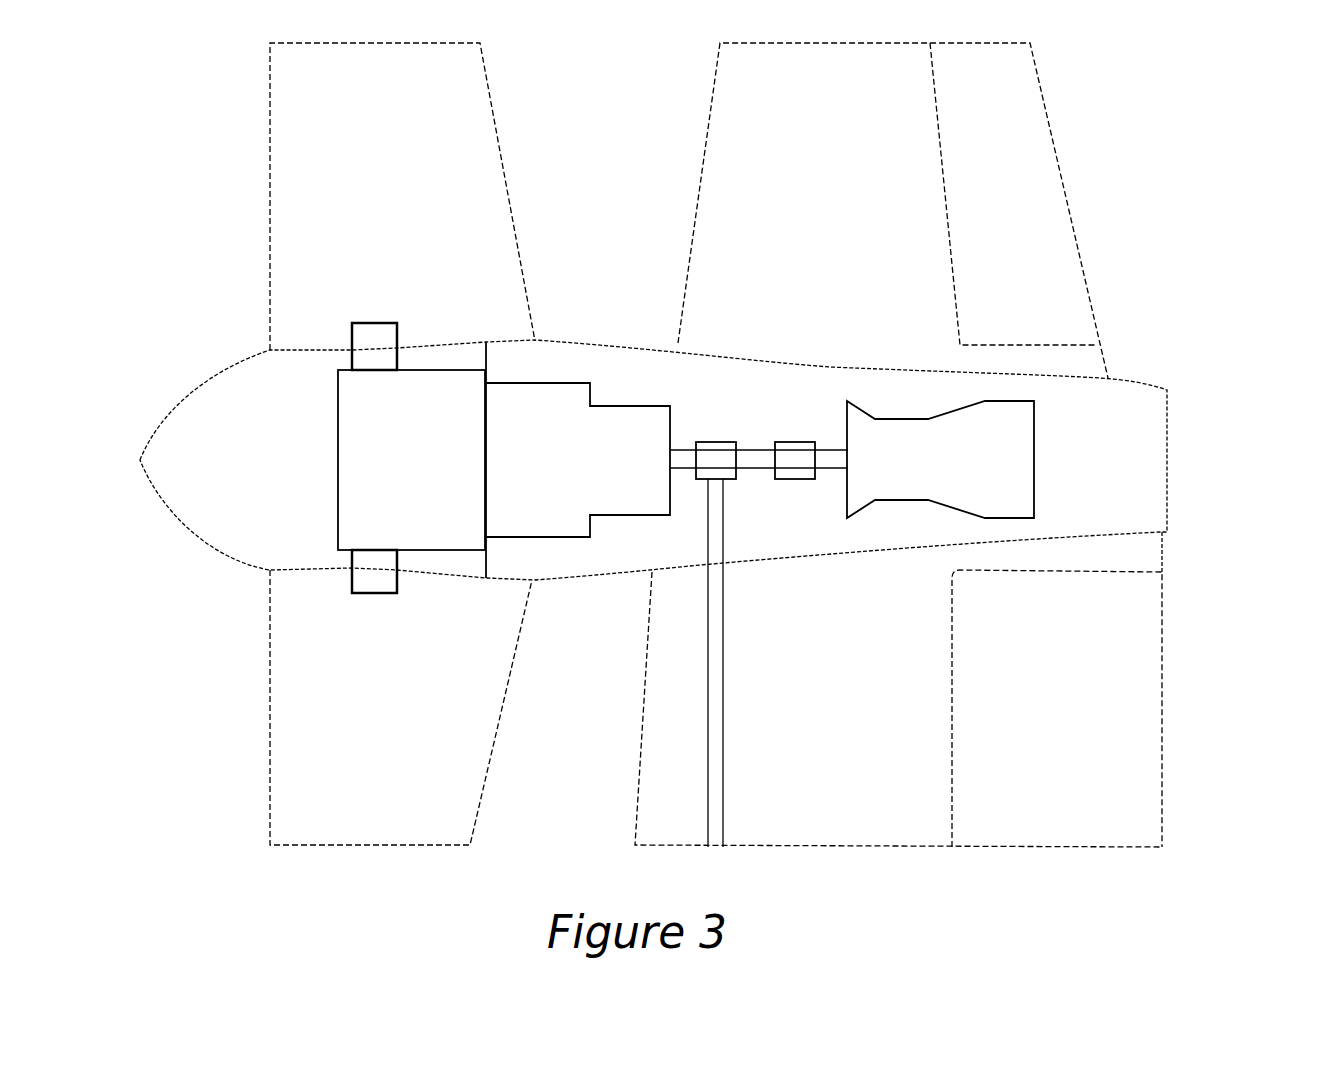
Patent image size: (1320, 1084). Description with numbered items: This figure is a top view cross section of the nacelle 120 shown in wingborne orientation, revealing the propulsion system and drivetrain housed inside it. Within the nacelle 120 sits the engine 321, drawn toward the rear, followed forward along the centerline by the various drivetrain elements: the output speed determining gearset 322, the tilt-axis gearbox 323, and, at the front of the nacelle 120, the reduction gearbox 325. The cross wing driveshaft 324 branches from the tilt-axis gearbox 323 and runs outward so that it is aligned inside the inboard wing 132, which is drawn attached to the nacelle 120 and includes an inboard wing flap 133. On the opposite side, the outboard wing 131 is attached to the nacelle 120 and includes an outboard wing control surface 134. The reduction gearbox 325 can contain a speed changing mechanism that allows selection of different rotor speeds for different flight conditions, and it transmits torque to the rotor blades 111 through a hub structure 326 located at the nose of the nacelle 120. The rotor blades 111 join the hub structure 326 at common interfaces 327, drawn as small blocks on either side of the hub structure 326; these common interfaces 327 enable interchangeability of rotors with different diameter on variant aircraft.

The rotor blades 111 is at (270, 212).
The nacelle 120 is at (592, 570).
The outboard wing 131 is at (715, 85).
The inboard wing 132 is at (640, 750).
The inboard wing flap 133 is at (1162, 749).
The outboard wing control surface 134 is at (1055, 160).
The engine 321 is at (960, 408).
The output speed determining gearset 322 is at (797, 442).
The tilt-axis gearbox 323 is at (729, 442).
The cross wing driveshaft 324 is at (723, 692).
The reduction gearbox 325 is at (578, 383).
The hub structure 326 is at (338, 468).
The common interfaces 327 is at (375, 323).